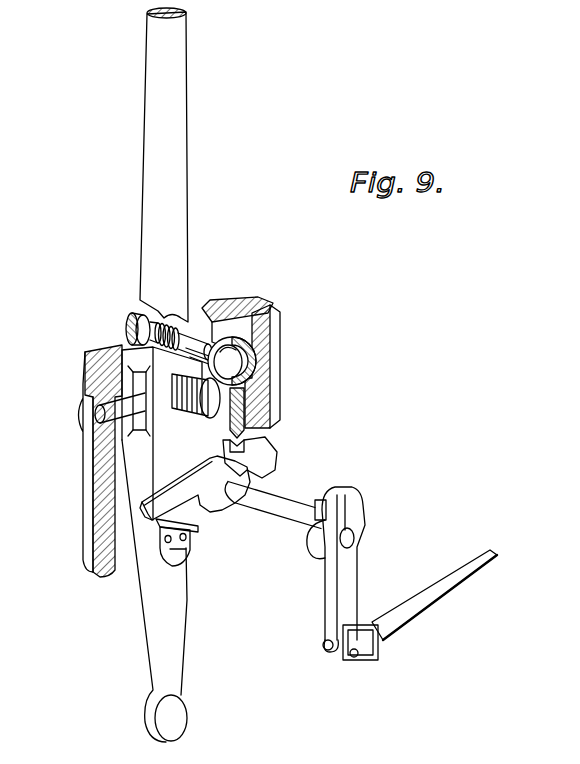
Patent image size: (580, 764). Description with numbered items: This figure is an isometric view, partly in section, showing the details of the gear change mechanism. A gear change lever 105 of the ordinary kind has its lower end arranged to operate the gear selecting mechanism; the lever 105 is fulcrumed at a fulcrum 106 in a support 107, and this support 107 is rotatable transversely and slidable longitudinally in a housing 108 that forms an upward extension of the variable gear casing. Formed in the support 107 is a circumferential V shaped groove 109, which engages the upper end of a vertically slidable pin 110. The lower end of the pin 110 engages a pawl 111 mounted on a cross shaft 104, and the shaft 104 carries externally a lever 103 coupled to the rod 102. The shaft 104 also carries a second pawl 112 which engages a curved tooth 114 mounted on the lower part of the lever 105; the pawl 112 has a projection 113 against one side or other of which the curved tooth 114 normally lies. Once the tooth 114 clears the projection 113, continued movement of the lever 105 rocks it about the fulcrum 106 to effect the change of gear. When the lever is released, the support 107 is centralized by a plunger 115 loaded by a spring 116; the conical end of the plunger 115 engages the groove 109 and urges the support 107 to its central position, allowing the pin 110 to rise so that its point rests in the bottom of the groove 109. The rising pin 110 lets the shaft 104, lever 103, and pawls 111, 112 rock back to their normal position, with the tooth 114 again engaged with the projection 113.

The rod 102 is at (425, 606).
The lever 103 is at (343, 588).
The cross shaft 104 is at (272, 498).
The gear change lever 105 is at (180, 115).
The fulcrum 106 is at (170, 412).
The support 107 is at (127, 383).
The housing 108 is at (102, 470).
The V shaped groove 109 is at (265, 340).
The vertically slidable pin 110 is at (262, 402).
The pawl 111 is at (258, 465).
The pawl 112 is at (165, 530).
The projection 113 is at (210, 507).
The curved tooth 114 is at (190, 548).
The plunger 115 is at (192, 346).
The spring 116 is at (168, 338).